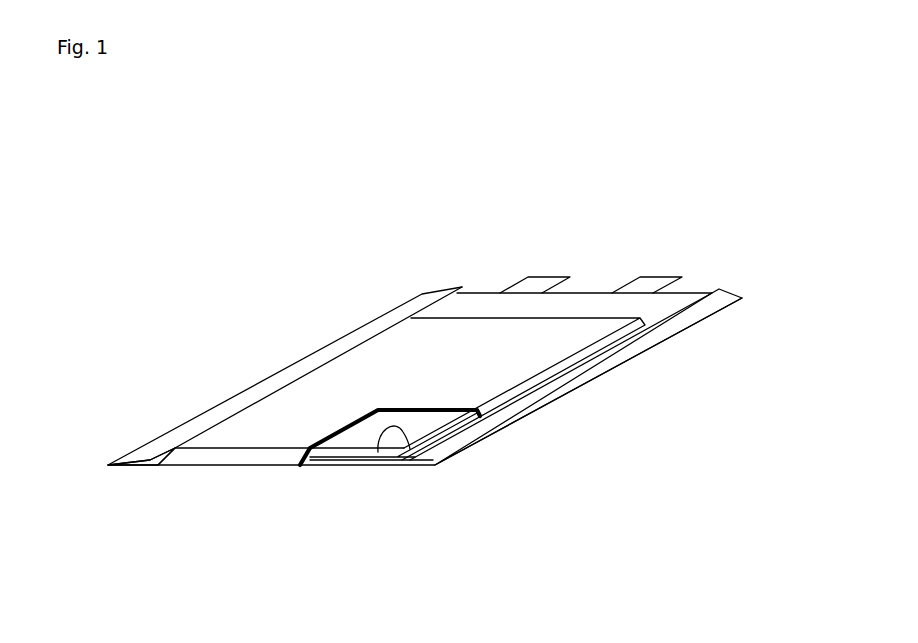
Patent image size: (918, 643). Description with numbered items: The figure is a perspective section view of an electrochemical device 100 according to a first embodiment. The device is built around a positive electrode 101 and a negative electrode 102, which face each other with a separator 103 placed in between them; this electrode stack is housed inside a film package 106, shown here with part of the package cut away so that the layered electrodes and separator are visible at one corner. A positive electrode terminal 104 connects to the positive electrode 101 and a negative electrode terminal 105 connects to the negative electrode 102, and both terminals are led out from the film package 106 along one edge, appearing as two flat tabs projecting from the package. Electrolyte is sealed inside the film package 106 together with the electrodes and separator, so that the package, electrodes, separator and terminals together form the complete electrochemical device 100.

The electrochemical device 100 is at (706, 171).
The positive electrode 101 is at (345, 440).
The negative electrode 102 is at (398, 459).
The separator 103 is at (387, 452).
The positive electrode terminal 104 is at (535, 286).
The negative electrode terminal 105 is at (651, 286).
The film package 106 is at (225, 455).